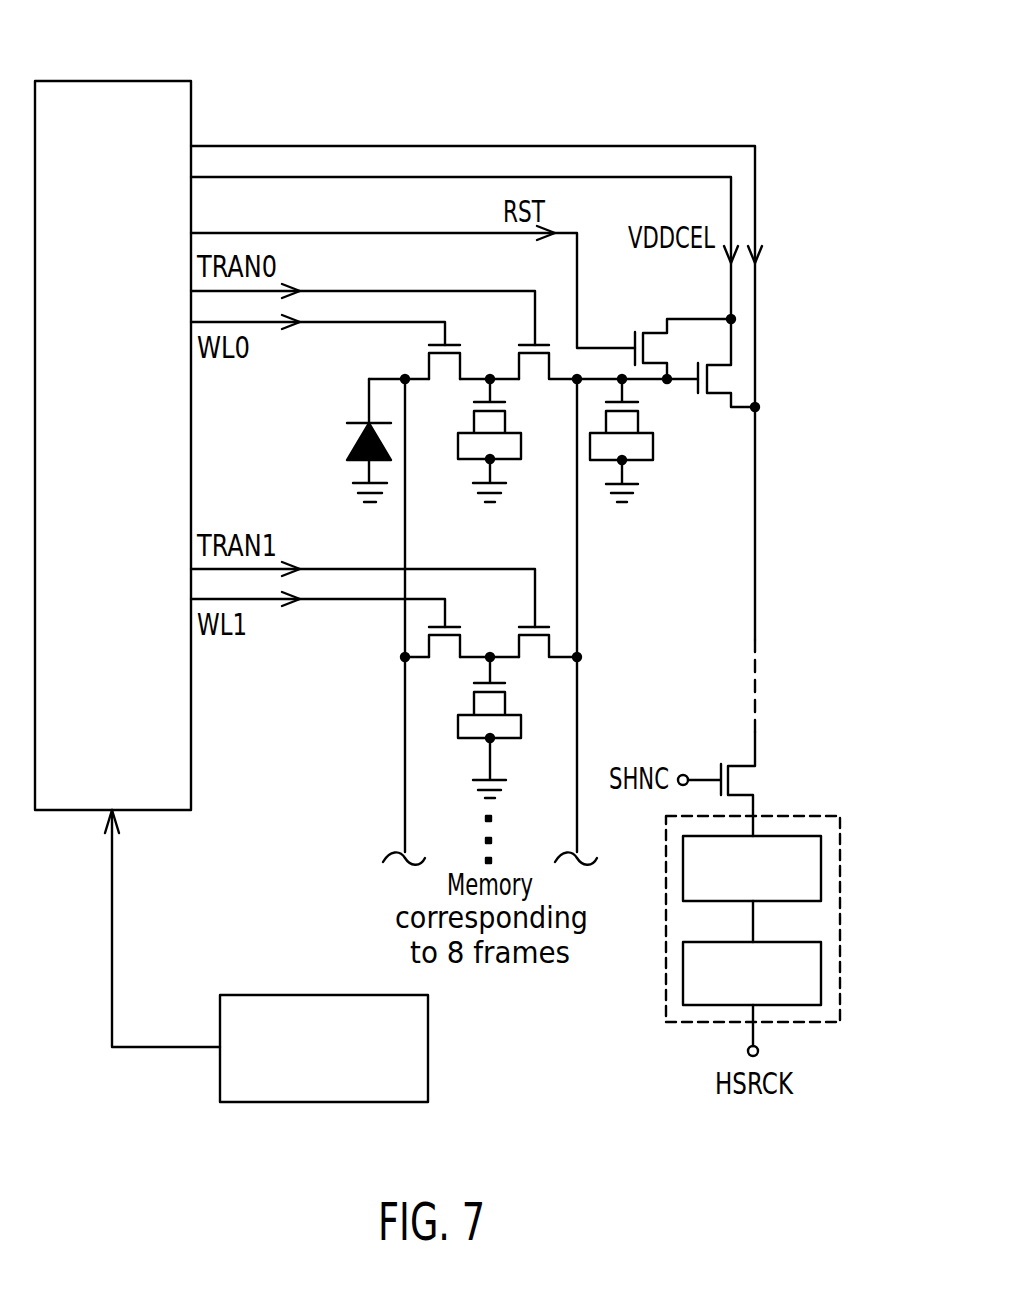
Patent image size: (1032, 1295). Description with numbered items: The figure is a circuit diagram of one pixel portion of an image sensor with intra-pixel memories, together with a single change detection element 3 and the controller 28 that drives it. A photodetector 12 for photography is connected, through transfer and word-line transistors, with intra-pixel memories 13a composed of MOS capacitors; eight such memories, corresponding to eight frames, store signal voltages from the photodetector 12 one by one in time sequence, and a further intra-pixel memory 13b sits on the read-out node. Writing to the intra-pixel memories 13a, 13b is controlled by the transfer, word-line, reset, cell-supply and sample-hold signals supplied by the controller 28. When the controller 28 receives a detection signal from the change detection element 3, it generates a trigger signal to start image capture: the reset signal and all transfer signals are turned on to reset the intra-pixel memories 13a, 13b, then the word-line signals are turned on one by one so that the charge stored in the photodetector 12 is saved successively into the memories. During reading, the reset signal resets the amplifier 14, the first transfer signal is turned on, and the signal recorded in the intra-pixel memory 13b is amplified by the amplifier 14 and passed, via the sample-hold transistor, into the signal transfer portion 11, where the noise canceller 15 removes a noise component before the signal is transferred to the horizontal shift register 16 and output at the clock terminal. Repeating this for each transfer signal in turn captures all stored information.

The controller 28 is at (157, 81).
The photodetector for photography 12 is at (348, 441).
The intra-pixel memory 13a is at (515, 427).
The intra-pixel memory 13b is at (647, 427).
The amplifier 14 is at (722, 378).
The signal transfer portion 11 is at (792, 815).
The noise reduction circuit 15 is at (821, 866).
The horizontal shift register 16 is at (821, 975).
The change detection element 3 is at (428, 1046).